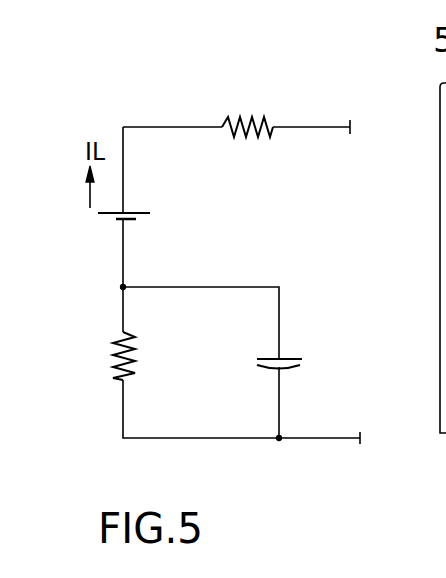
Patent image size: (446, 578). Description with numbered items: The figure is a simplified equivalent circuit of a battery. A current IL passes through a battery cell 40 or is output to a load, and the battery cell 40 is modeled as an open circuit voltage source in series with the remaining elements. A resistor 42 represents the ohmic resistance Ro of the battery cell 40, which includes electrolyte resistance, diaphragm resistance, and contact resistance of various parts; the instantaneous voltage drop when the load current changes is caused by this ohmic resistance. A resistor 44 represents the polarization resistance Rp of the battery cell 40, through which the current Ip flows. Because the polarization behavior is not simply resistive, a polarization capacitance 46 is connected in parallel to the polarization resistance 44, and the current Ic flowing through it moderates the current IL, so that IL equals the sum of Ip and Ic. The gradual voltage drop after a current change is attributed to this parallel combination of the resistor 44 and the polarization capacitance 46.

The battery cell 40 is at (117, 222).
The resistor 42 is at (249, 118).
The resistor 44 is at (115, 360).
The polarization capacitance 46 is at (292, 358).